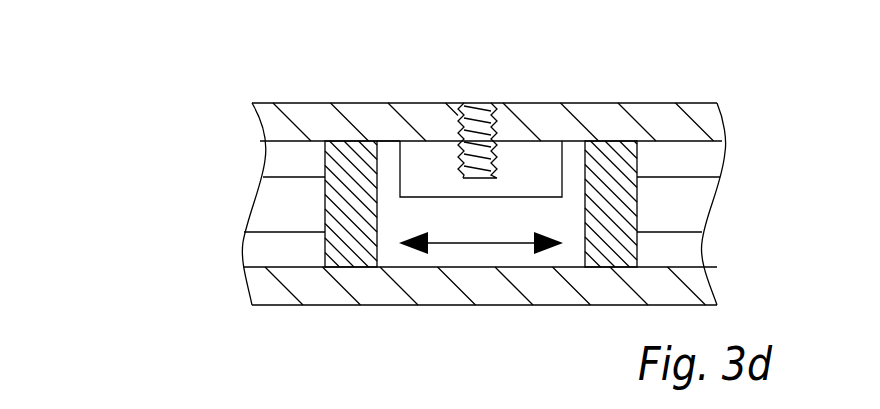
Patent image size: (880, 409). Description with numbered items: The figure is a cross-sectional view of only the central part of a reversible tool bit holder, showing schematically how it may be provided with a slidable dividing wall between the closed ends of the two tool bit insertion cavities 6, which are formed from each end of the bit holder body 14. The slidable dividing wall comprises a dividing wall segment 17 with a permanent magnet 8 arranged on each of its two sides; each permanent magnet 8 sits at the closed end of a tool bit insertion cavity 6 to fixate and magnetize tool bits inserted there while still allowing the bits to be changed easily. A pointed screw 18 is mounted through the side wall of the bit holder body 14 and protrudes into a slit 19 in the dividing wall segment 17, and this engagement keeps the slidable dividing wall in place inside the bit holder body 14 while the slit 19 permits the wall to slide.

The tool bit insertion cavity 6 is at (637, 205).
The permanent magnet 8 is at (363, 140).
The bit holder body 14 is at (382, 268).
The dividing wall segment 17 is at (395, 155).
The pointed screw 18 is at (473, 105).
The slit 19 is at (548, 150).